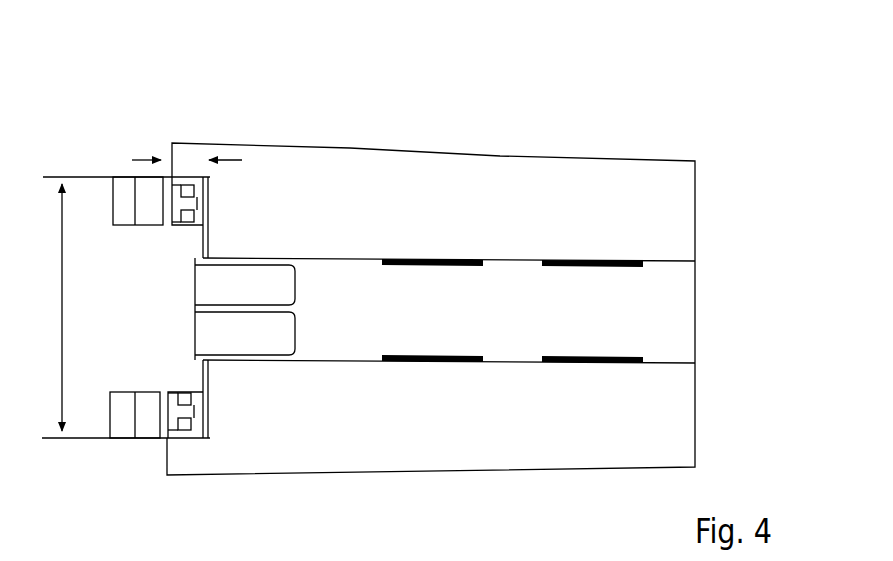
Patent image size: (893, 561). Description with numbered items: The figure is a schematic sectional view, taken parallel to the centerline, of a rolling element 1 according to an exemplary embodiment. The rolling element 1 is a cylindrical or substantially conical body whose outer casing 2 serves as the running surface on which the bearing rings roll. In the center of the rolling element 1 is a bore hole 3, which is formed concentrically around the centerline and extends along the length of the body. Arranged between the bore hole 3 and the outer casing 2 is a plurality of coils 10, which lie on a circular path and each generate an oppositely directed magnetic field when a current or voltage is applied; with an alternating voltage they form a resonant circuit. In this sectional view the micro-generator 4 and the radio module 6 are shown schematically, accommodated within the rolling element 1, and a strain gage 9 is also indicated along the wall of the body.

The rolling element 1 is at (707, 147).
The outer casing 2 is at (600, 160).
The bore hole 3 is at (702, 333).
The micro-generator 4 is at (258, 285).
The radio module 6 is at (255, 335).
The strain gage 9 is at (572, 257).
The coils 10 is at (173, 203).